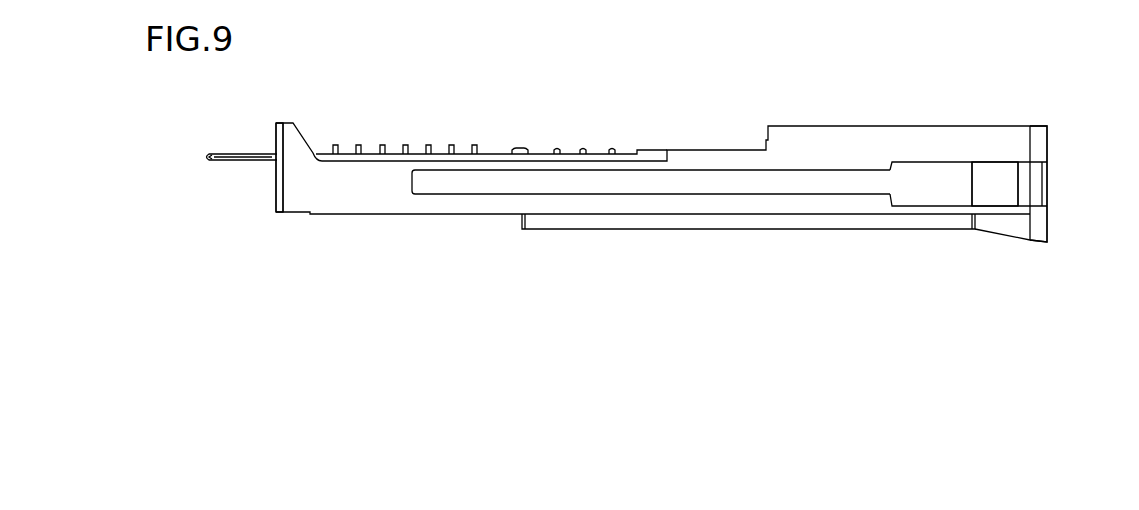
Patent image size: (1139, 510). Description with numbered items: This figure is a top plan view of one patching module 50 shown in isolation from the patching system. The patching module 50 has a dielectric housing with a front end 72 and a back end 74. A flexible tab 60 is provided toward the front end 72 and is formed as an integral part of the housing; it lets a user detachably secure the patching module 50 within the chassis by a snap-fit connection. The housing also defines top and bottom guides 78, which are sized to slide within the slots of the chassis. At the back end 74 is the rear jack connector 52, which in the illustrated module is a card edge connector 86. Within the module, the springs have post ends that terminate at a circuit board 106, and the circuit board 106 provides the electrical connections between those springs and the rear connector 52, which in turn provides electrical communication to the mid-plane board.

The patching module 50 is at (392, 243).
The rear jack connector 52 is at (240, 153).
The flexible tab 60 is at (996, 180).
The front end 72 is at (1047, 148).
The back end 74 is at (277, 197).
The top and bottom guides 78 is at (690, 178).
The card edge connector 86 is at (215, 159).
The circuit board 106 is at (493, 155).